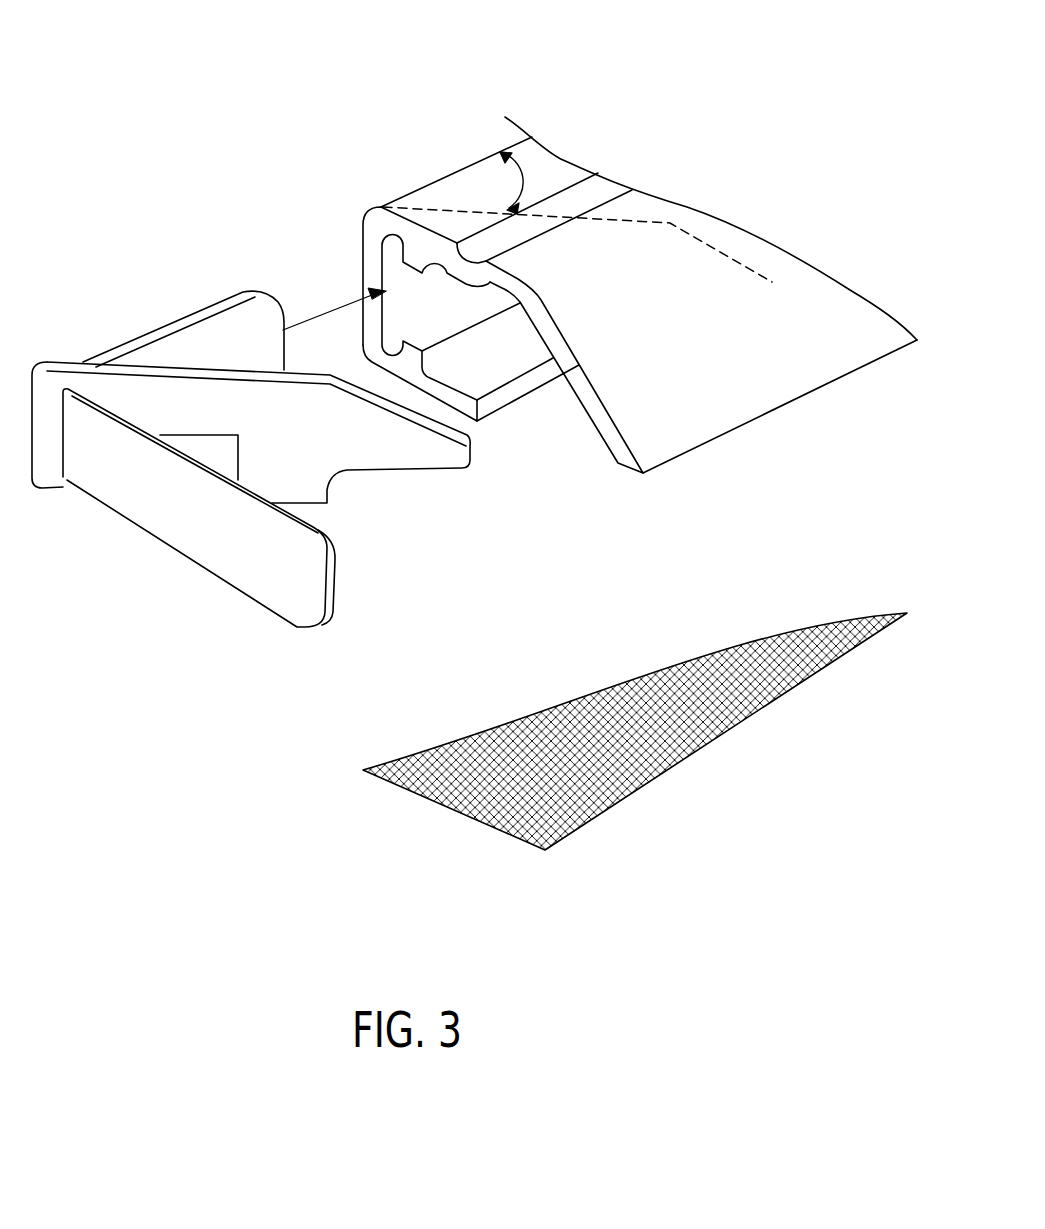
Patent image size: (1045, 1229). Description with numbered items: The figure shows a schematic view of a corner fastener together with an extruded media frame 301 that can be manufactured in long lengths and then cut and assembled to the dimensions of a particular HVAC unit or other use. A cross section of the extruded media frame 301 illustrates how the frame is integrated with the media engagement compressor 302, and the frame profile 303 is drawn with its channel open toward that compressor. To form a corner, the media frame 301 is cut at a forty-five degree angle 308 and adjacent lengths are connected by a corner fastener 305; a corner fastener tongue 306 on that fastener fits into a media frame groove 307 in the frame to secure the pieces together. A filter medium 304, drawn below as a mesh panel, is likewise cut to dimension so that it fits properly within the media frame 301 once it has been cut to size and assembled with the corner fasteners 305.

The extruded media frame 301 is at (597, 190).
The media engagement compressor 302 is at (677, 432).
The rail body 303 is at (427, 208).
The filter medium 304 is at (565, 715).
The corner fastener 305 is at (135, 342).
The corner fastener tongue 306 is at (258, 330).
The media frame groove 307 is at (397, 273).
The 45 degree angle 308 is at (507, 207).